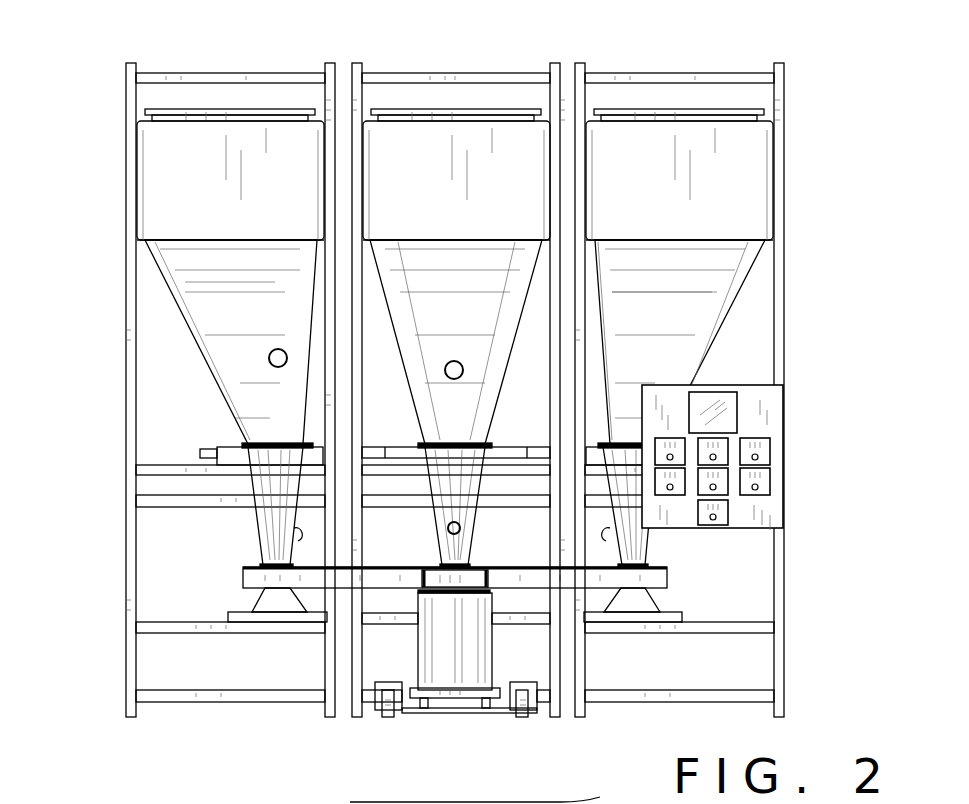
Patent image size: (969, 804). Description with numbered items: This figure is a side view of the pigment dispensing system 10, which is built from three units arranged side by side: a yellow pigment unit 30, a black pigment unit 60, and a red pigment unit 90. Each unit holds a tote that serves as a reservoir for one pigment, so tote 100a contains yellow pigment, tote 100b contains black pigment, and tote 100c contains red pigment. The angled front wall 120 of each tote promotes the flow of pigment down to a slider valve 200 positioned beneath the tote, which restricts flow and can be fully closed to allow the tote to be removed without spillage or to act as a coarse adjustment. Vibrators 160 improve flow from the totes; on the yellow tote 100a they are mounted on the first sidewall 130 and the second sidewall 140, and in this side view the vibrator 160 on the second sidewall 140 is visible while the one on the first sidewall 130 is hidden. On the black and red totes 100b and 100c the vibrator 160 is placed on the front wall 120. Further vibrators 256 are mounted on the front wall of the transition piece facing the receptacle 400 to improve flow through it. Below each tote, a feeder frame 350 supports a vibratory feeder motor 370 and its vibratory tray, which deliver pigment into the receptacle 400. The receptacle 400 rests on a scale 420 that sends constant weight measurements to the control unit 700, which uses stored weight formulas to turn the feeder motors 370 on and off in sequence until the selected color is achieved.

The system 10 is at (452, 47).
The yellow pigment unit 30 is at (249, 58).
The black pigment unit 60 is at (437, 58).
The red pigment unit 90 is at (681, 56).
The tote 100a is at (188, 186).
The tote 100b is at (408, 163).
The tote 100c is at (735, 167).
The front wall 120 is at (415, 297).
The first sidewall 130 is at (680, 288).
The second sidewall 140 is at (215, 290).
The vibrator 160 is at (268, 358).
The slider valve 200 is at (240, 453).
The vibrator 256 is at (300, 538).
The feeder frame 350 is at (127, 637).
The vibratory feeder motor 370 is at (278, 600).
The receptacle 400 is at (440, 648).
The scale 420 is at (460, 695).
The control unit 700 is at (767, 420).